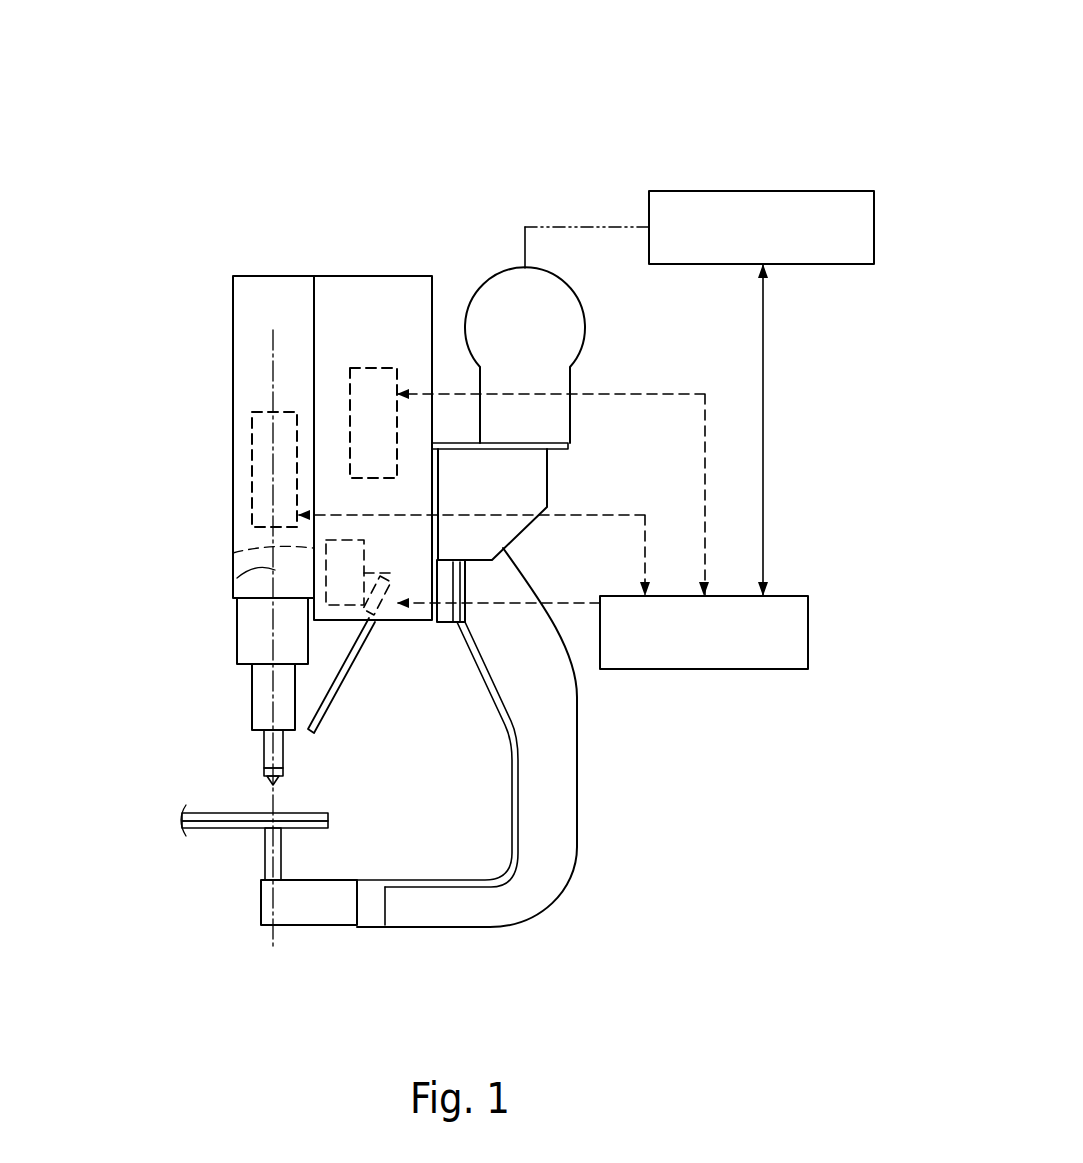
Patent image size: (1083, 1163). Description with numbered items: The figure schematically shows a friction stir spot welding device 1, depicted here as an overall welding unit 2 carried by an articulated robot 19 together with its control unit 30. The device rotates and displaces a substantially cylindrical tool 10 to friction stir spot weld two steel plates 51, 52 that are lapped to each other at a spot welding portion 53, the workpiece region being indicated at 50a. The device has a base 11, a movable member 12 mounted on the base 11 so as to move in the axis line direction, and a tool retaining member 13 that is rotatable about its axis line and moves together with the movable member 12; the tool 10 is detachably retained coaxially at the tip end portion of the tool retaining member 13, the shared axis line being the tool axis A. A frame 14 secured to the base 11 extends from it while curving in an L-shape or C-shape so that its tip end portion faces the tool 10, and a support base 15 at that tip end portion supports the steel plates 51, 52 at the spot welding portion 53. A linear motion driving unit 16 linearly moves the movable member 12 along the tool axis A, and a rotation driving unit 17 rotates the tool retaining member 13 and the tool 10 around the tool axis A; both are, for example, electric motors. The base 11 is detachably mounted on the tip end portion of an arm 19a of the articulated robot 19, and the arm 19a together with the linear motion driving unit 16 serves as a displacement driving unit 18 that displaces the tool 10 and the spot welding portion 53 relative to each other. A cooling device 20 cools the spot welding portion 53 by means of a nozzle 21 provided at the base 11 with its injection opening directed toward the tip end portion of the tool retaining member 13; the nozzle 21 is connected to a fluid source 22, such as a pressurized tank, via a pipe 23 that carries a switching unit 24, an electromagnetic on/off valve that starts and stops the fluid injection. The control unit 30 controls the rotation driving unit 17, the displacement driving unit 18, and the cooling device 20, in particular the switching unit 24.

The friction stir spot welding device 1 is at (808, 107).
The welding device 2 is at (207, 242).
The tool 10 is at (265, 786).
The base 11 is at (413, 277).
The movable member 12 is at (233, 340).
The tool retaining member 13 is at (250, 700).
The frame 14 is at (577, 812).
The support base 15 is at (265, 857).
The linear motion driving unit 16 is at (365, 368).
The rotation driving unit 17 is at (275, 412).
The displacement driving unit 18 is at (712, 103).
The articulated robot 19 is at (705, 191).
The arm 19a is at (585, 318).
The cooling device 20 is at (402, 652).
The nozzle 21 is at (343, 685).
The fluid source 22 is at (233, 553).
The pipe 23 is at (390, 620).
The switching unit 24 is at (390, 582).
The control unit 30 is at (700, 669).
The workpiece 50a is at (287, 812).
The steel plate 51 is at (212, 813).
The steel plate 52 is at (212, 828).
The spot welding portion 53 is at (282, 832).
The tool axis A is at (233, 572).